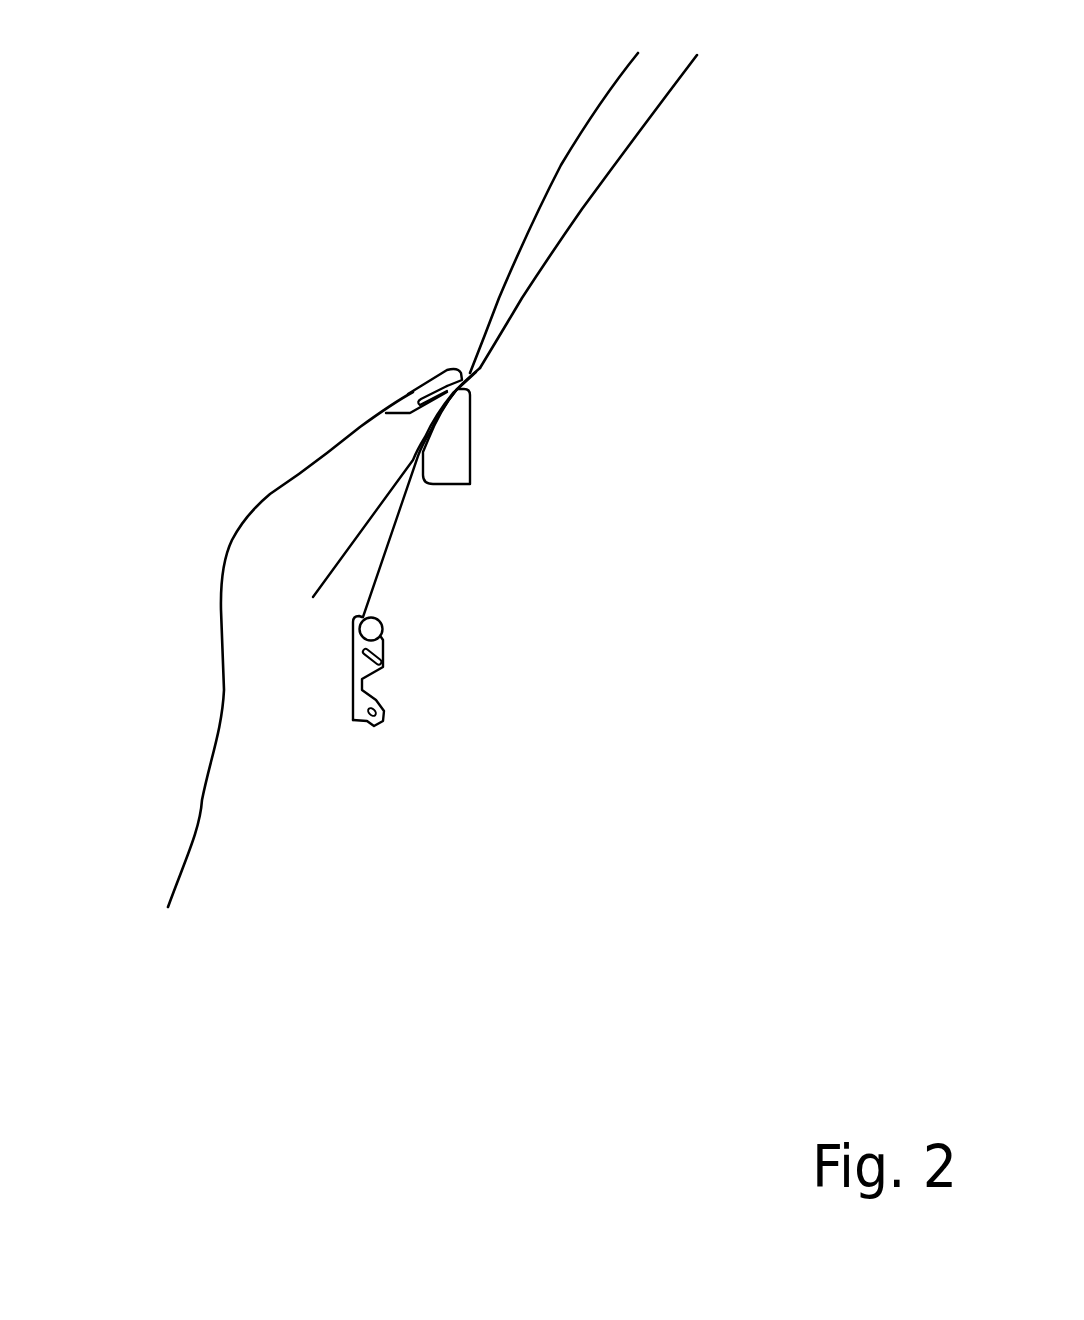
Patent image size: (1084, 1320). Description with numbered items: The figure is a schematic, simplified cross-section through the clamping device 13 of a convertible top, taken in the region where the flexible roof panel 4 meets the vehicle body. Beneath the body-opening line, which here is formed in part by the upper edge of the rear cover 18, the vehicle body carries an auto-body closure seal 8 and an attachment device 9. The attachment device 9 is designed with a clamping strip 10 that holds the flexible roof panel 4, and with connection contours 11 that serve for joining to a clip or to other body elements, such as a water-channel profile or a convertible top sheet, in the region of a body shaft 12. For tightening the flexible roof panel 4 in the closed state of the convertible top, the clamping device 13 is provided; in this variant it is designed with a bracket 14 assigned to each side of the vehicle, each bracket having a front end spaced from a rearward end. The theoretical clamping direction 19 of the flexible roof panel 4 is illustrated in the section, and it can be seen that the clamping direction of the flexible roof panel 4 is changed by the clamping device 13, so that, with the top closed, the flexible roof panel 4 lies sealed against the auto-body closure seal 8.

The flexible roof panel 4 is at (560, 164).
The theoretical clamping direction 19 is at (583, 209).
The rear cover 18 is at (267, 493).
The auto-body closure seal 8 is at (403, 402).
The bracket 14 is at (467, 460).
The clamping device 13 is at (469, 482).
The body shaft 12 is at (342, 723).
The clamping strip 10 is at (377, 623).
The attachment device 9 is at (385, 643).
The connection contours 11 is at (378, 716).